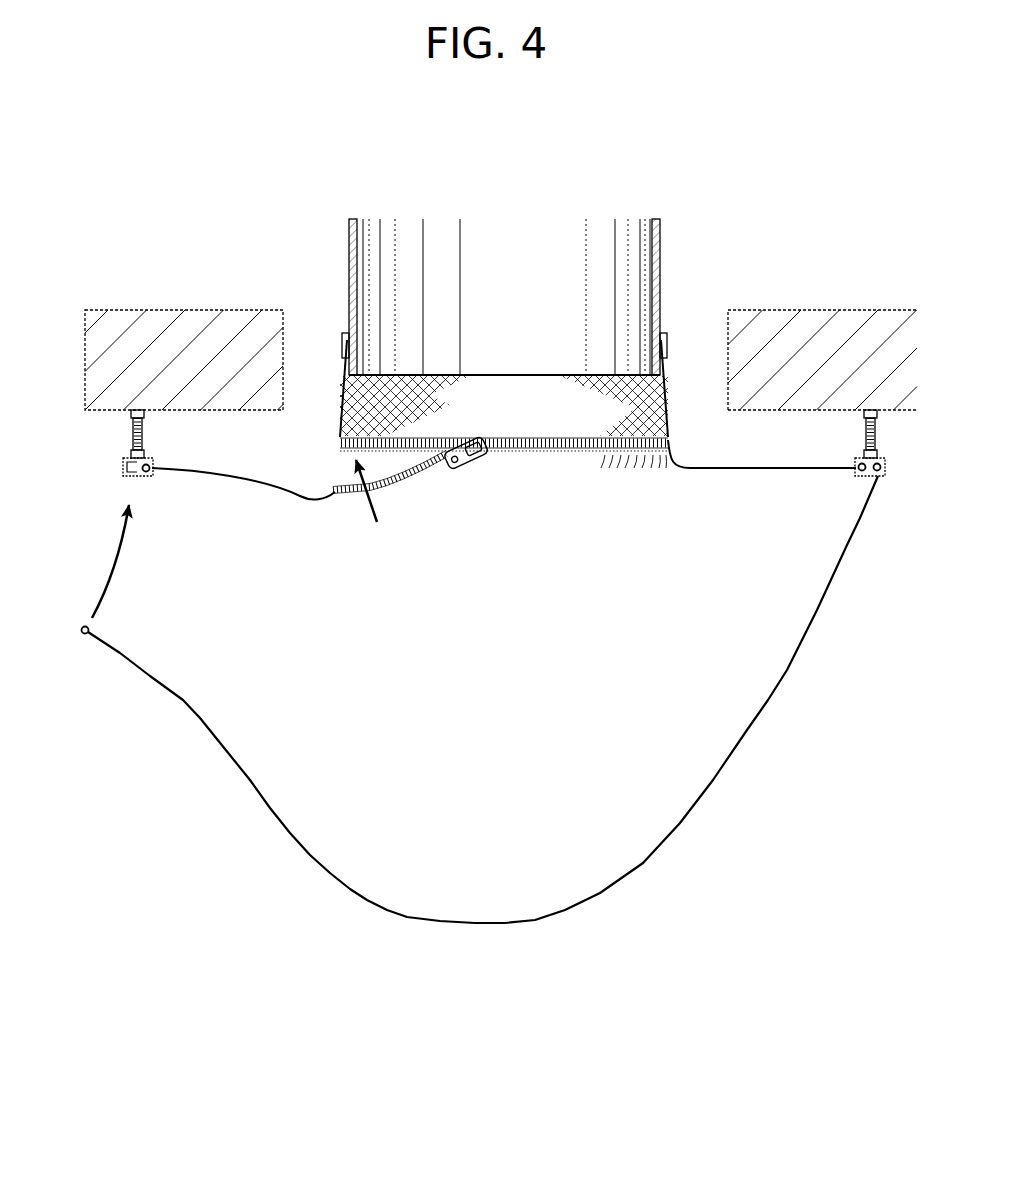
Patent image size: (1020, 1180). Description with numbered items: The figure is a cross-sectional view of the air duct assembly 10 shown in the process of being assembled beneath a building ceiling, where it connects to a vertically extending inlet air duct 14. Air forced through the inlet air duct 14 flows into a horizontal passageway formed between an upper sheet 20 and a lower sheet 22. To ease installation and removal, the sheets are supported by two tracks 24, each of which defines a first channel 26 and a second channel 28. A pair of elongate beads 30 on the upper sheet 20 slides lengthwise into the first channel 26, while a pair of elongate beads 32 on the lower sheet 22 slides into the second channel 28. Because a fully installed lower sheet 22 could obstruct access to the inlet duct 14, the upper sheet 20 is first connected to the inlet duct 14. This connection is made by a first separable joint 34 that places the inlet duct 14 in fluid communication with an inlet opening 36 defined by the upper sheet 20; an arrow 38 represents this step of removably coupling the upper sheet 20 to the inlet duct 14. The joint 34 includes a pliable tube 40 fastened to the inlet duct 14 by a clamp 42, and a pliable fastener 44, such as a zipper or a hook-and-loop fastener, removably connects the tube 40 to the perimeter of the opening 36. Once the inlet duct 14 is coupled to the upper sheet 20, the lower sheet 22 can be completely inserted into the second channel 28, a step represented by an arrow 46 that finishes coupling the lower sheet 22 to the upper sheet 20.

The air duct assembly 10 is at (256, 907).
The inlet air duct 14 is at (660, 242).
The upper sheet 20 is at (232, 478).
The lower sheet 22 is at (200, 722).
The track 24 is at (128, 462).
The first channel 26 is at (162, 476).
The second channel 28 is at (125, 481).
The elongate bead 30 is at (147, 478).
The elongate bead 32 is at (81, 632).
The first separable joint 34 is at (680, 428).
The inlet opening 36 is at (531, 478).
The arrow 38 is at (366, 515).
The pliable tube 40 is at (345, 386).
The clamp 42 is at (667, 345).
The pliable fastener 44 is at (672, 441).
The arrow 46 is at (108, 578).